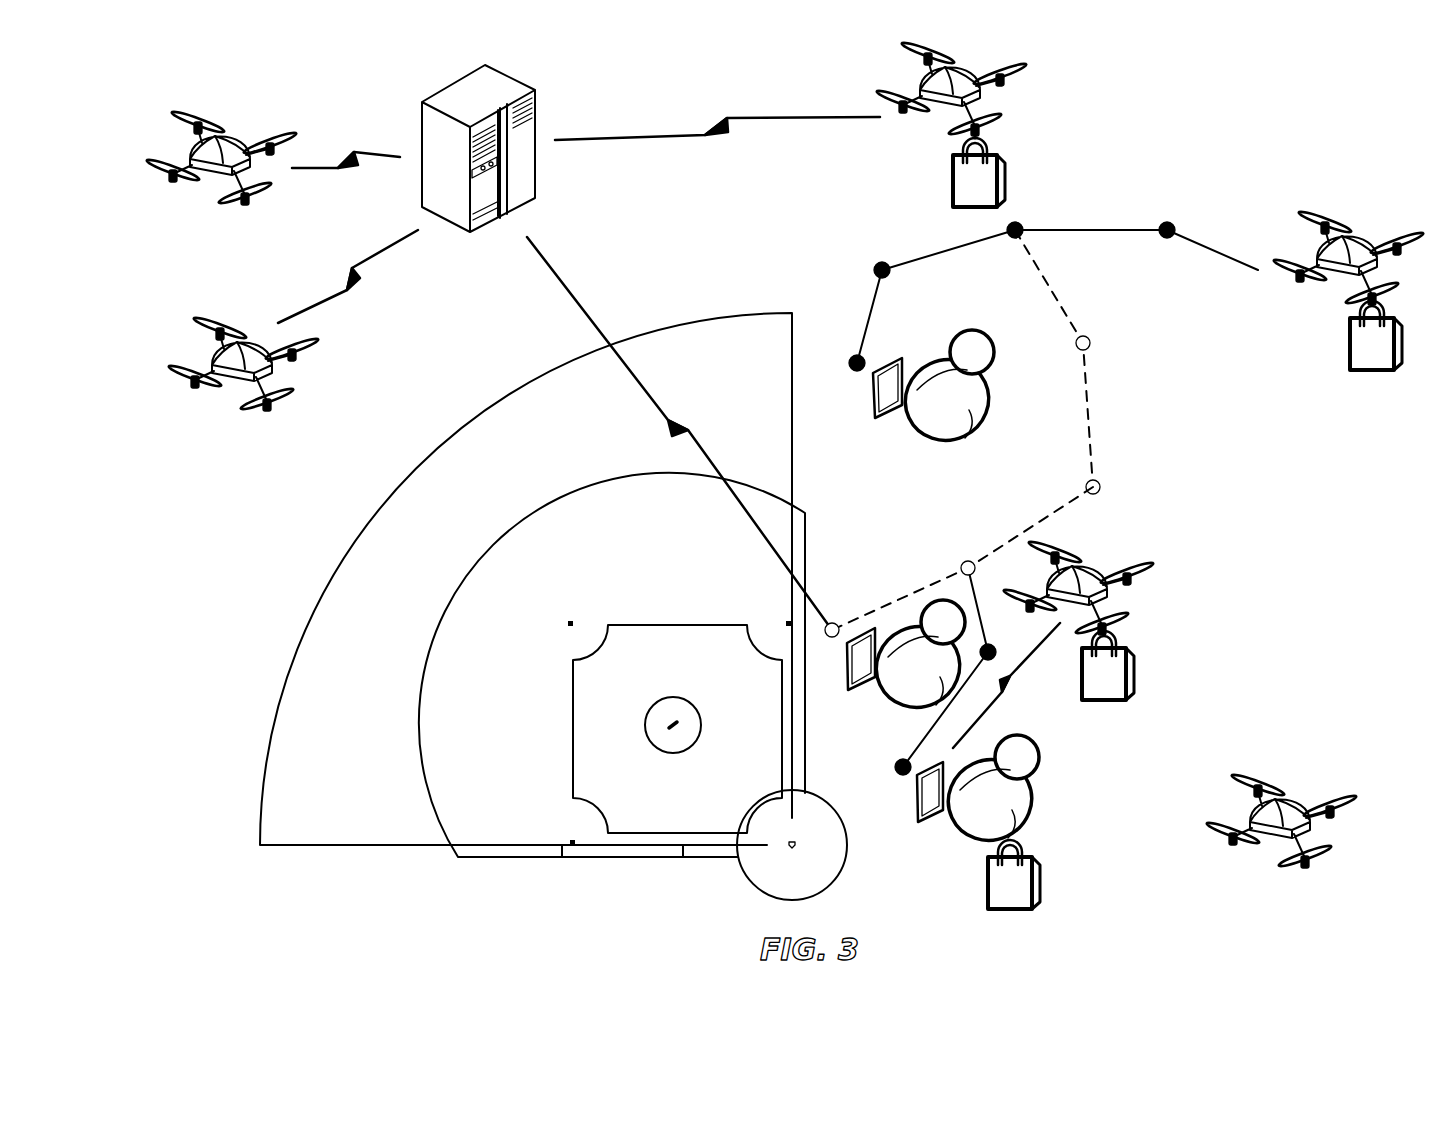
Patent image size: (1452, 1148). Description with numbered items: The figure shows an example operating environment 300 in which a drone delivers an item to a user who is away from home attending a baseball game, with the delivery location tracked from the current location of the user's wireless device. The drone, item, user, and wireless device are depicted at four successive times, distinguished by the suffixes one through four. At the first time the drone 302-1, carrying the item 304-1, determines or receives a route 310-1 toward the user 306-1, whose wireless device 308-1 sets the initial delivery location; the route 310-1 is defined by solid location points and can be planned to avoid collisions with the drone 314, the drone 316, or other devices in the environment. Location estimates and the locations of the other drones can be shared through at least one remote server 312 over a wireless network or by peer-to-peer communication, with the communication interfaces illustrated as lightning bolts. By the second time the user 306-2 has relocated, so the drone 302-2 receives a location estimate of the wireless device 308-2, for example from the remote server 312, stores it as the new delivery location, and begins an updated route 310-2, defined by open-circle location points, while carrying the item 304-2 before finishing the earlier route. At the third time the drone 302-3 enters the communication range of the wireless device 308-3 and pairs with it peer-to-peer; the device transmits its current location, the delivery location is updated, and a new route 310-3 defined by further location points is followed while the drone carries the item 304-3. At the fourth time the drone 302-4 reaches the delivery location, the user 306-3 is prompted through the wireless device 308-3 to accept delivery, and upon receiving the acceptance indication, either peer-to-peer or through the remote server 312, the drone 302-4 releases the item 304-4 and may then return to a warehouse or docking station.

The operating environment 300 is at (1343, 132).
The drone at time T1 302-1 is at (1343, 220).
The drone at time T2 302-2 is at (1007, 85).
The drone at time T3 302-3 is at (1080, 553).
The drone at time T4 302-4 is at (1283, 788).
The item at time T1 304-1 is at (1355, 373).
The item at time T2 304-2 is at (952, 202).
The item at time T3 304-3 is at (1112, 708).
The item at time T4 304-4 is at (1010, 913).
The user at time T1 306-1 is at (957, 440).
The user at time T2 306-2 is at (925, 715).
The user at time T3 306-3 is at (1030, 790).
The wireless device at time T1 308-1 is at (895, 357).
The wireless device at time T2 308-2 is at (872, 625).
The wireless device at time T3 308-3 is at (927, 823).
The route at time T1 310-1 is at (1103, 230).
The updated route at time T2 310-2 is at (1087, 385).
The new route at time T3 310-3 is at (965, 568).
The remote server 312 is at (535, 180).
The drone 314 is at (218, 125).
The drone 316 is at (238, 330).